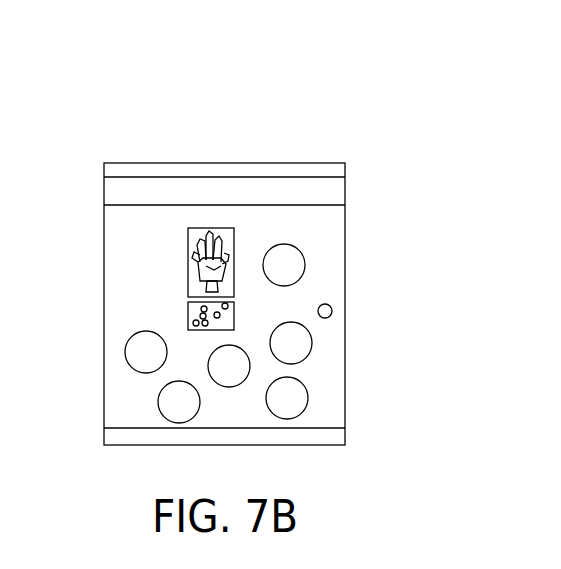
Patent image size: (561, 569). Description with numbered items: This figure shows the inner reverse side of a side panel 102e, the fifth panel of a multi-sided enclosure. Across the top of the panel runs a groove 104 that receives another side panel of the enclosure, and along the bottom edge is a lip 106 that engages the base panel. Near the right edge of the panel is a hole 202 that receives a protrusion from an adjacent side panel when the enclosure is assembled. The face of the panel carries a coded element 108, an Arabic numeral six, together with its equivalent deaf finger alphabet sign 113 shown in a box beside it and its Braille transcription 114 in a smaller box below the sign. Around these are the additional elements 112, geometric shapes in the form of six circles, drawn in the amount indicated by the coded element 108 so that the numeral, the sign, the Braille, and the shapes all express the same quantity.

The side panel 102e is at (306, 62).
The groove 104 is at (325, 195).
The lip 106 is at (345, 432).
The coded element 108 is at (90, 275).
The additional element 112 is at (120, 387).
The deaf finger alphabet sign 113 is at (234, 241).
The Braille transcription 114 is at (234, 312).
The hole 202 is at (332, 309).